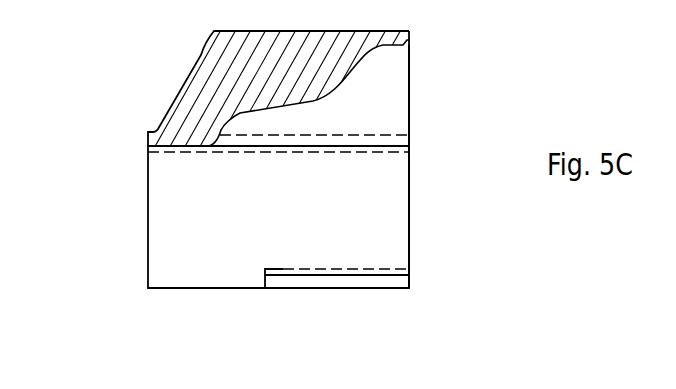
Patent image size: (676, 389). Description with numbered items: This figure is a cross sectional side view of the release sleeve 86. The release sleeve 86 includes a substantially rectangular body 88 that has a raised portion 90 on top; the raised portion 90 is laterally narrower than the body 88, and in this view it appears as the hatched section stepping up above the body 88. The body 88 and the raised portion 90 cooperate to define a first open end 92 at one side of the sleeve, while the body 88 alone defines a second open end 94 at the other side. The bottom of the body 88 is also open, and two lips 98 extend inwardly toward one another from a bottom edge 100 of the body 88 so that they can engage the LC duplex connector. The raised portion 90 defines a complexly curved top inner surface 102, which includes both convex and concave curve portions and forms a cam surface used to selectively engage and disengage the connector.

The release sleeve 86 is at (129, 102).
The body 88 is at (147, 241).
The raised portion 90 is at (188, 75).
The first open end 92 is at (410, 210).
The second open end 94 is at (147, 183).
The lip 98 is at (303, 273).
The bottom edge 100 is at (191, 288).
The curved top inner surface 102 is at (313, 101).